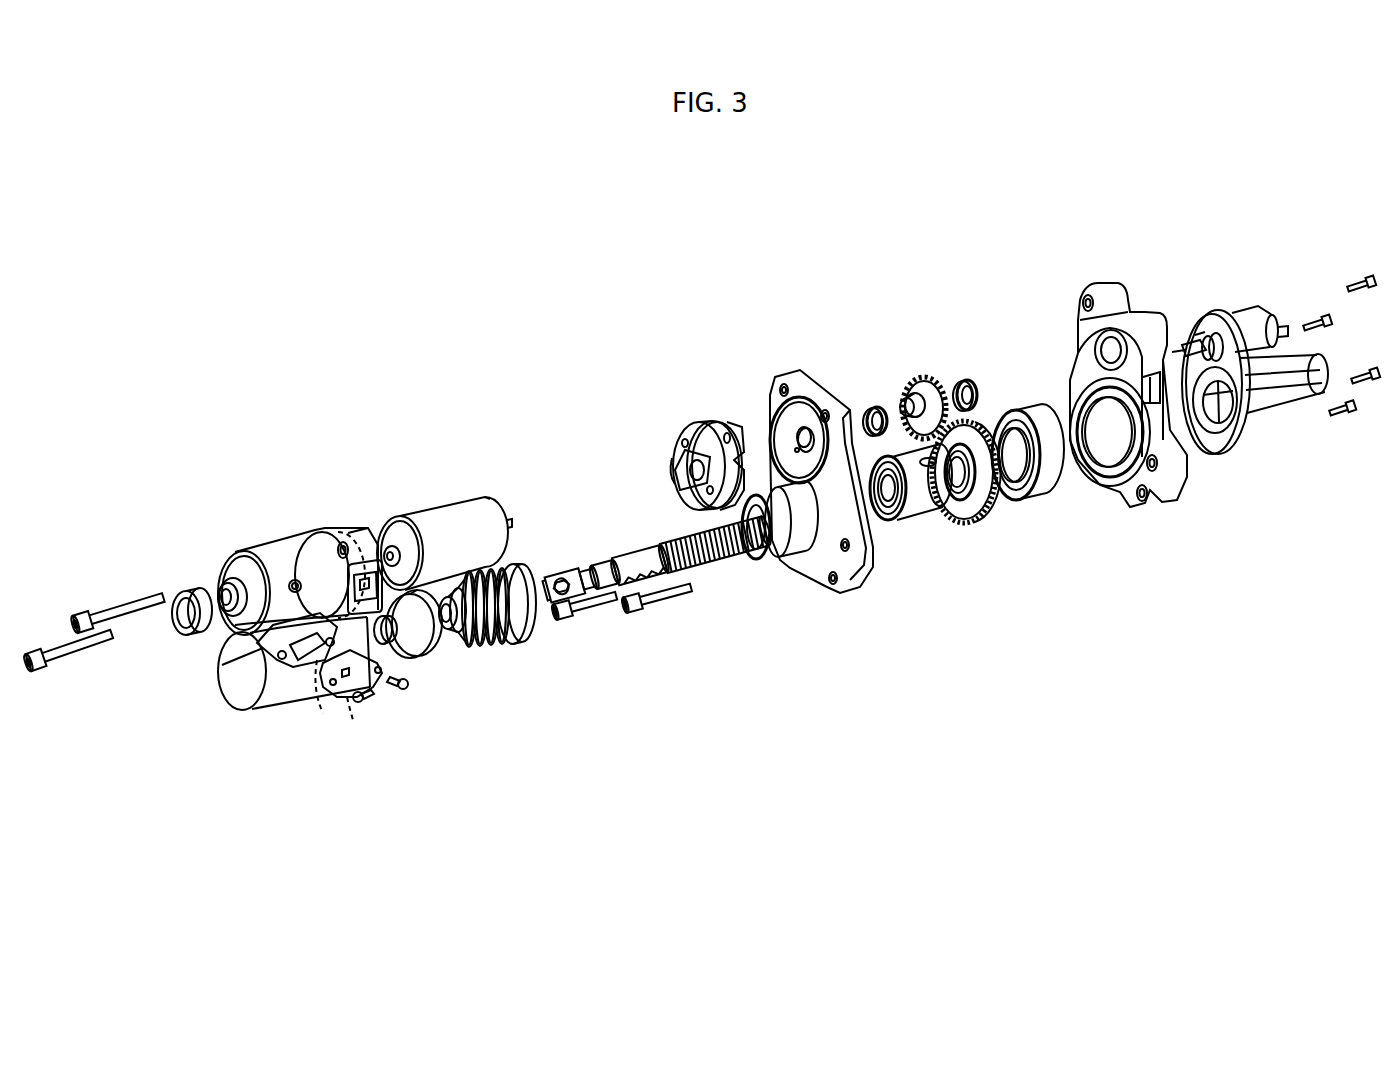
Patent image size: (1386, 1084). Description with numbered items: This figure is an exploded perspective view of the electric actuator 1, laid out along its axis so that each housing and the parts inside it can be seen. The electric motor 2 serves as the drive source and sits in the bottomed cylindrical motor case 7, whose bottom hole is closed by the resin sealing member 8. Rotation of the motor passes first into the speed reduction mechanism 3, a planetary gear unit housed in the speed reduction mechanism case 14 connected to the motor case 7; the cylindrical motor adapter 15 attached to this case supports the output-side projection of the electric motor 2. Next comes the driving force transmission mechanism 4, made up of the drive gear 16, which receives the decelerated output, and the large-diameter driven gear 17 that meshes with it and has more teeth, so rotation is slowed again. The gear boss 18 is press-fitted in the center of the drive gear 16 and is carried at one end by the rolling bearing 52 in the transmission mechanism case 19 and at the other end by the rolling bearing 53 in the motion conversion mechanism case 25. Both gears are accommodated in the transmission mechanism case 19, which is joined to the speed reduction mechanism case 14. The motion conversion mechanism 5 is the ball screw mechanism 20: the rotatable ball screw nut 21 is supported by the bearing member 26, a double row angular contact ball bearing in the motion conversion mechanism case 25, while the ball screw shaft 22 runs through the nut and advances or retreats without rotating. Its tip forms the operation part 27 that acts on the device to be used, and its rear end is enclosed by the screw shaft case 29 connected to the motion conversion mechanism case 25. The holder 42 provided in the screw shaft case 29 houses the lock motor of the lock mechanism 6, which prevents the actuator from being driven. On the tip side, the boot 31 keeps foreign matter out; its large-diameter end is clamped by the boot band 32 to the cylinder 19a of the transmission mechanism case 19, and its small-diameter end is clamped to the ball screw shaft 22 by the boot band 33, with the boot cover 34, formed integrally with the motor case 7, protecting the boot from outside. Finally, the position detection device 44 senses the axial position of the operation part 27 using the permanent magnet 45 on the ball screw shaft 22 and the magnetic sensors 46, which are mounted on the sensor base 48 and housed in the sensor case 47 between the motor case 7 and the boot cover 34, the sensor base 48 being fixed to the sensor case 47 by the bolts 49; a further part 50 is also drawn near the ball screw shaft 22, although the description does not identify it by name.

The electric actuator 1 is at (684, 288).
The electric motor 2 is at (430, 510).
The speed reduction mechanism 3 is at (682, 432).
The driving force transmission mechanism 4 is at (912, 359).
The motion conversion mechanism 5 is at (874, 520).
The ball screw mechanism 20 is at (874, 520).
The lock mechanism 6 is at (1244, 356).
The motor case 7 is at (275, 555).
The sealing member 8 is at (180, 592).
The speed reduction mechanism case 14 is at (682, 434).
The motor adapter 15 is at (676, 458).
The drive gear 16 is at (918, 382).
The driven gear 17 is at (969, 504).
The gear boss 18 is at (905, 400).
The transmission mechanism case 19 is at (807, 474).
The cylinder 19a is at (803, 545).
The ball screw nut 21 is at (930, 500).
The ball screw shaft 22 is at (720, 570).
The motion conversion mechanism case 25 is at (1100, 290).
The bearing member 26 is at (1048, 478).
The operation part 27 is at (546, 585).
The screw shaft case 29 is at (1285, 397).
The boot 31 is at (512, 622).
The boot band 32 is at (393, 647).
The boot band 33 is at (438, 647).
The boot cover 34 is at (290, 693).
The holder 42 is at (1240, 318).
The position detection device 44 is at (430, 573).
The permanent magnet 45 is at (640, 540).
The magnetic sensors 46 is at (355, 660).
The sensor case 47 is at (228, 696).
The sensor base 48 is at (348, 690).
The bolts 49 is at (362, 700).
The piston 50 is at (612, 548).
The rolling bearing 52 is at (872, 407).
The rolling bearing 53 is at (965, 380).